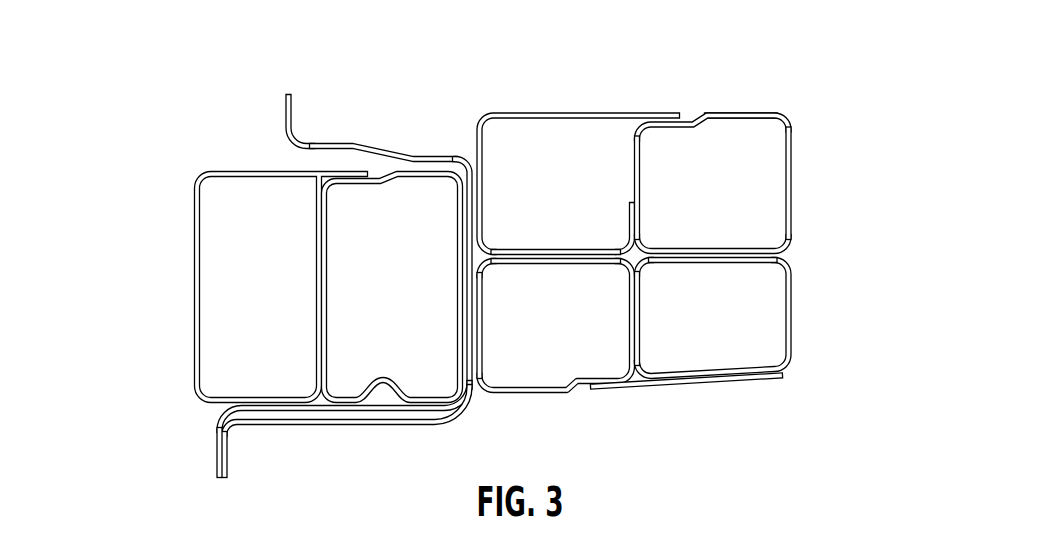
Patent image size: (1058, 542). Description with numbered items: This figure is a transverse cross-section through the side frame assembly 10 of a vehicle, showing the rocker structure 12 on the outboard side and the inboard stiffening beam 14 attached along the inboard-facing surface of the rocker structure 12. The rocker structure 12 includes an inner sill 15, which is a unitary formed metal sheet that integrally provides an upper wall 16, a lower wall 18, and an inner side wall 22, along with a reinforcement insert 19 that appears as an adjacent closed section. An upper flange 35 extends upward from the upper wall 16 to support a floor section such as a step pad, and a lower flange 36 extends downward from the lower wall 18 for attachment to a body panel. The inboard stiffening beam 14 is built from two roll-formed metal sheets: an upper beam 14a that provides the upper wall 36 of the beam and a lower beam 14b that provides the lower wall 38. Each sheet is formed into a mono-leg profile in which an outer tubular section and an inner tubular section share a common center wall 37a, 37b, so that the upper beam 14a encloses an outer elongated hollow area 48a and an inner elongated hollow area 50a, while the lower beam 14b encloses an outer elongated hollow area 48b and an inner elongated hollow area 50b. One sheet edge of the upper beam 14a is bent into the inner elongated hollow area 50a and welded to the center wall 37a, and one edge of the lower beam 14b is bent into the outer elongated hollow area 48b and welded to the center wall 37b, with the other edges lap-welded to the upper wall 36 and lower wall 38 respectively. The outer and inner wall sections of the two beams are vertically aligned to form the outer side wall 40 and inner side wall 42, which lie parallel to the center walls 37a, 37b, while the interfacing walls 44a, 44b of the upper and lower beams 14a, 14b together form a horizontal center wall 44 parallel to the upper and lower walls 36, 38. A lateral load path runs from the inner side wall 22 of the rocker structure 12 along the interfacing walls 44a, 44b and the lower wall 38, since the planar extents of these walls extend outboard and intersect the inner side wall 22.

The side frame assembly 10 is at (168, 77).
The rocker structure 12 is at (365, 433).
The inboard stiffening beam 14 is at (708, 301).
The upper beam 14a is at (706, 341).
The lower beam 14b is at (708, 179).
The inner sill 15 is at (348, 137).
The upper wall 16 is at (428, 152).
The lower wall 18 is at (273, 427).
The reinforcement insert 19 is at (187, 185).
The inner side wall 22 is at (466, 208).
The upper flange 35 is at (295, 116).
The upper wall 36 is at (217, 440).
The center wall 37a is at (640, 187).
The center wall 37b is at (640, 322).
The lower wall 38 is at (747, 377).
The outer side wall 40 is at (482, 332).
The inner side wall 42 is at (797, 120).
The center wall 44 is at (737, 263).
The interfacing wall 44a is at (570, 250).
The interfacing wall 44b is at (560, 262).
The outer elongated hollow area 48a is at (579, 184).
The outer elongated hollow area 48b is at (556, 325).
The inner elongated hollow area 50a is at (713, 184).
The inner elongated hollow area 50b is at (713, 318).